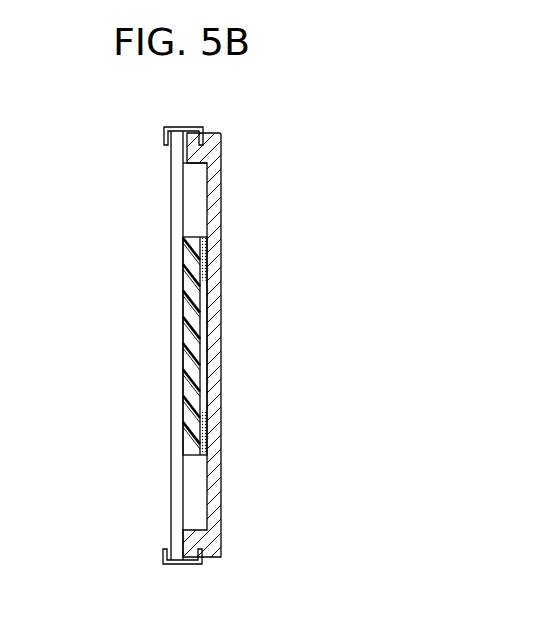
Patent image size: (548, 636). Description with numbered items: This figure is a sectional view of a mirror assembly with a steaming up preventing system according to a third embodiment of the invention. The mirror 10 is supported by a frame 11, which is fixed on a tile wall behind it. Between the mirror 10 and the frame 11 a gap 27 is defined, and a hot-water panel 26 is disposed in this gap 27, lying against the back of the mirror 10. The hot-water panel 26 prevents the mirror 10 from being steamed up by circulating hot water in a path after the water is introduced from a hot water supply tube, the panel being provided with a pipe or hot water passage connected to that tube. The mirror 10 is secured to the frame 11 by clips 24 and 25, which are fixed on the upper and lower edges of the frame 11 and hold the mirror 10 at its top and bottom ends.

The mirror 10 is at (170, 278).
The frame 11 is at (222, 200).
The clip 24 is at (196, 128).
The clip 25 is at (200, 563).
The hot-water panel 26 is at (193, 457).
The gap 27 is at (187, 202).